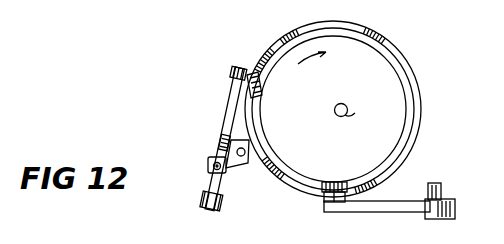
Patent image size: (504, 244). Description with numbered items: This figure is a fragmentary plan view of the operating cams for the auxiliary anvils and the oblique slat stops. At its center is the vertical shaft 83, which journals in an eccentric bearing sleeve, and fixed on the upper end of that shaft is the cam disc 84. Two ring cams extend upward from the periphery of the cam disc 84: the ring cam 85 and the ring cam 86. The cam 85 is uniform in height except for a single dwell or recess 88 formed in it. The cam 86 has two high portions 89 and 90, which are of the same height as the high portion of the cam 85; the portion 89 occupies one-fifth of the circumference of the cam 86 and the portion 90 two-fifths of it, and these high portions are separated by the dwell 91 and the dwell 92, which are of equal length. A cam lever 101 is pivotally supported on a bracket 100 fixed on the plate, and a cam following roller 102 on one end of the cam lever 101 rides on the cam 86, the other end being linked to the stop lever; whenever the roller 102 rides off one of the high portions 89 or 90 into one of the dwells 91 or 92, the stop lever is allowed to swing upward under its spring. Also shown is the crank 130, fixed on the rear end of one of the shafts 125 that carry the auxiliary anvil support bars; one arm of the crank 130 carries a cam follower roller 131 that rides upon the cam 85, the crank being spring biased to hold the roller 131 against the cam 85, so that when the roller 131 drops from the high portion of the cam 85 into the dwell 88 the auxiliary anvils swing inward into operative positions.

The vertical shaft 83 is at (354, 109).
The cam disc 84 is at (349, 81).
The ring cam 85 is at (428, 101).
The ring cam 86 is at (283, 38).
The dwell 88 is at (364, 35).
The high portion 89 is at (262, 135).
The high portion 90 is at (413, 168).
The dwell 91 is at (335, 25).
The dwell 92 is at (289, 184).
The bracket 100 is at (218, 140).
The cam lever 101 is at (209, 161).
The cam following roller 102 is at (238, 84).
The shaft 125 is at (442, 187).
The crank 130 is at (391, 206).
The cam follower roller 131 is at (337, 181).